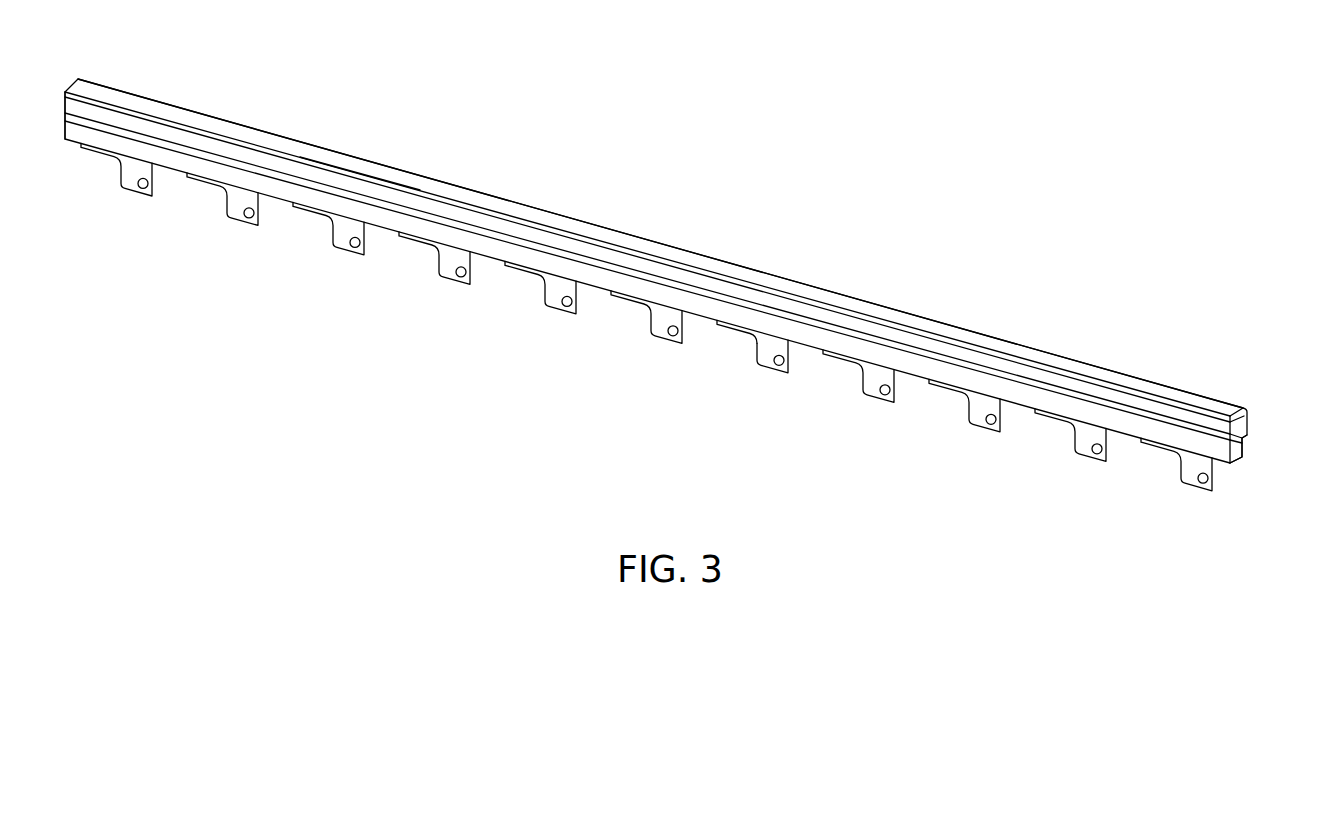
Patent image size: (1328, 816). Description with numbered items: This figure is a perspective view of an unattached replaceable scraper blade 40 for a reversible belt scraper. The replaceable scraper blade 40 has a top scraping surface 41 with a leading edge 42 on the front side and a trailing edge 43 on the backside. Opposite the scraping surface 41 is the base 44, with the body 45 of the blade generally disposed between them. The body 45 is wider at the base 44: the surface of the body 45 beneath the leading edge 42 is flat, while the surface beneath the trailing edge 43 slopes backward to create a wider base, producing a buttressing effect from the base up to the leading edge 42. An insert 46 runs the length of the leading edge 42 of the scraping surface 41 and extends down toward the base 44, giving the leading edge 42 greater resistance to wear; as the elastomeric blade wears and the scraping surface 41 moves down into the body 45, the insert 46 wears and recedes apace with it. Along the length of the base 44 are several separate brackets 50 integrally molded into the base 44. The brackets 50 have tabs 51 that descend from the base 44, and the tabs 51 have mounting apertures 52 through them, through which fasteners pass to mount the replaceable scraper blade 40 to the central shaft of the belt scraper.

The replaceable scraper blade 40 is at (648, 196).
The scraping surface 41 is at (889, 312).
The leading edge 42 is at (824, 312).
The trailing edge 43 is at (976, 332).
The base 44 is at (1240, 455).
The body 45 is at (1240, 442).
The insert 46 is at (1145, 398).
The brackets 50 is at (781, 374).
The tabs 51 is at (772, 370).
The mounting apertures 52 is at (789, 365).